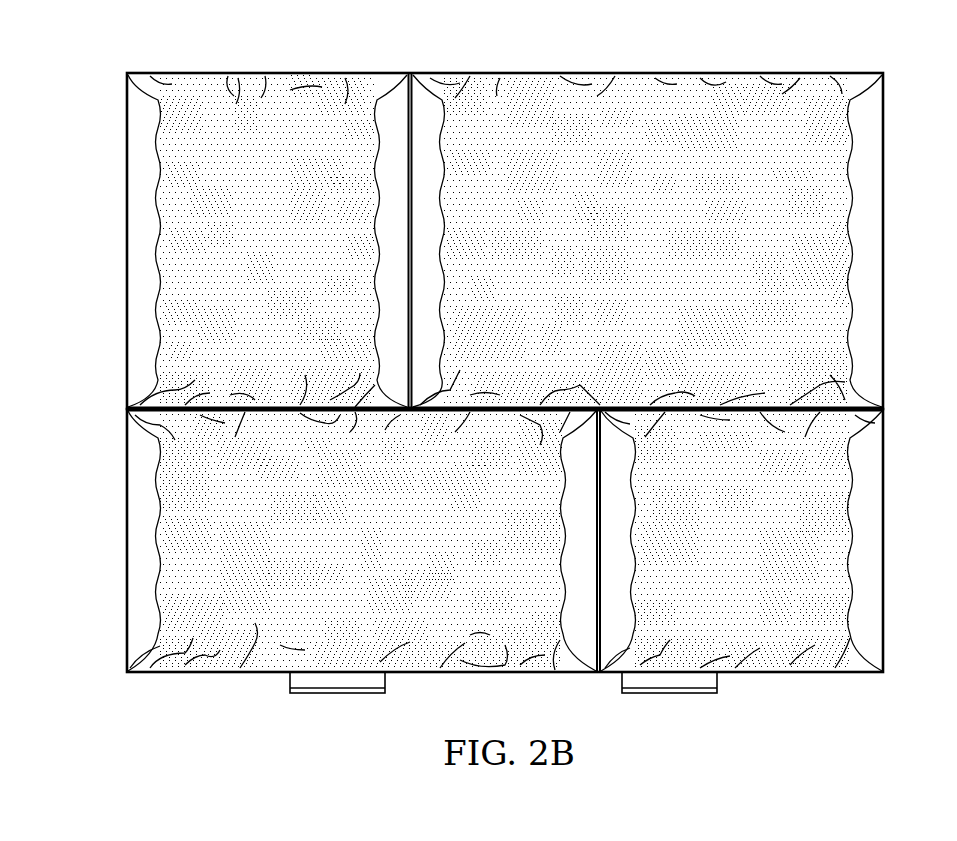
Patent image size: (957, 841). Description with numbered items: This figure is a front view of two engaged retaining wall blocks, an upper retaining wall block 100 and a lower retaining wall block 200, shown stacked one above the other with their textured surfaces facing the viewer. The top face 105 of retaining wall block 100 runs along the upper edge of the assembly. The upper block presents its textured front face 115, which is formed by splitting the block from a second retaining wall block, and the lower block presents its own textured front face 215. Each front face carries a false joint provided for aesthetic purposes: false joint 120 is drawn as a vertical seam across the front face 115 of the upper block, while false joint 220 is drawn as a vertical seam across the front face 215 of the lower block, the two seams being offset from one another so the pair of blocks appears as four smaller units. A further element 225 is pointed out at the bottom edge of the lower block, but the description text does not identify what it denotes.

The first panel assembly 100 is at (100, 252).
The panel 105 is at (660, 72).
The panel 115 is at (258, 110).
The joint 120 is at (398, 112).
The second panel assembly 200 is at (100, 532).
The panel 215 is at (260, 622).
The joint 220 is at (586, 676).
The bottom edge 225 is at (806, 682).